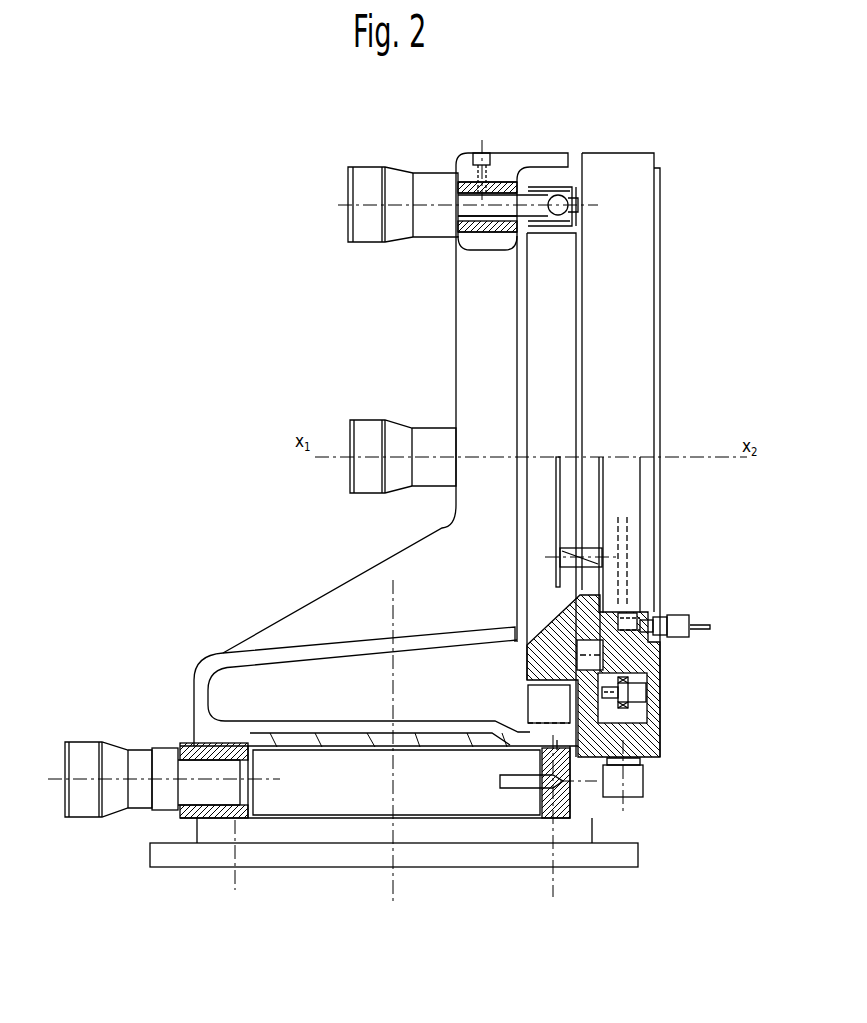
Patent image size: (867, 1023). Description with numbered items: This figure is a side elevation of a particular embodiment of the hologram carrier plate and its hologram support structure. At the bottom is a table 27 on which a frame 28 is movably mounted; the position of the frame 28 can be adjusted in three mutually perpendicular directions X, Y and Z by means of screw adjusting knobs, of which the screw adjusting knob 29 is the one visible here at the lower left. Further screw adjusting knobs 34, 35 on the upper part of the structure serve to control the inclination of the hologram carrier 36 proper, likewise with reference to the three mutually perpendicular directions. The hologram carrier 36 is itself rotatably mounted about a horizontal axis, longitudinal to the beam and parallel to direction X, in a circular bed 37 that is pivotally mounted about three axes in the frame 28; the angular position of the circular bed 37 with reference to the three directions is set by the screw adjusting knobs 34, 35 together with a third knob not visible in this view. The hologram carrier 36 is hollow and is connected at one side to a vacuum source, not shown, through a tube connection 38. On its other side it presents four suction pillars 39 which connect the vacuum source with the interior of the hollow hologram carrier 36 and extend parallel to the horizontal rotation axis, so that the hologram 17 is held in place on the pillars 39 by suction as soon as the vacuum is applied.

The hologram 17 is at (560, 507).
The table 27 is at (337, 853).
The frame 28 is at (223, 652).
The screw adjusting knob 29 is at (86, 760).
The screw adjusting knob 34 is at (352, 200).
The screw adjusting knob 35 is at (365, 428).
The hologram carrier 36 is at (627, 651).
The circular bed 37 is at (568, 623).
The tube connection 38 is at (683, 615).
The suction pillars 39 is at (565, 553).